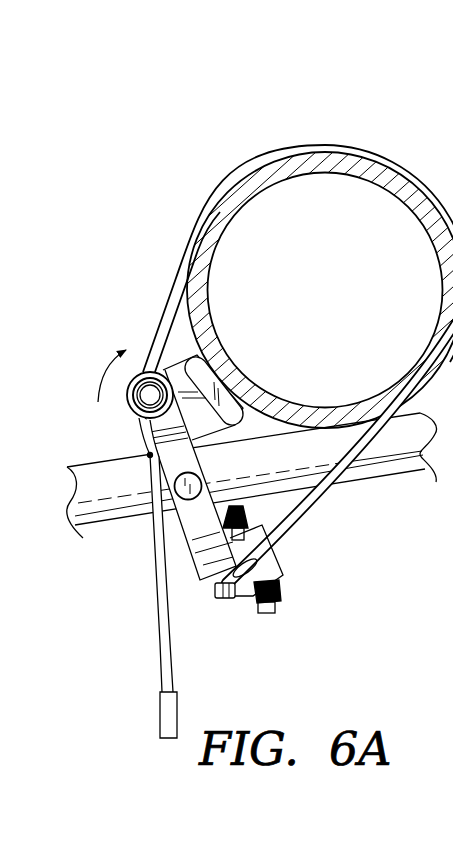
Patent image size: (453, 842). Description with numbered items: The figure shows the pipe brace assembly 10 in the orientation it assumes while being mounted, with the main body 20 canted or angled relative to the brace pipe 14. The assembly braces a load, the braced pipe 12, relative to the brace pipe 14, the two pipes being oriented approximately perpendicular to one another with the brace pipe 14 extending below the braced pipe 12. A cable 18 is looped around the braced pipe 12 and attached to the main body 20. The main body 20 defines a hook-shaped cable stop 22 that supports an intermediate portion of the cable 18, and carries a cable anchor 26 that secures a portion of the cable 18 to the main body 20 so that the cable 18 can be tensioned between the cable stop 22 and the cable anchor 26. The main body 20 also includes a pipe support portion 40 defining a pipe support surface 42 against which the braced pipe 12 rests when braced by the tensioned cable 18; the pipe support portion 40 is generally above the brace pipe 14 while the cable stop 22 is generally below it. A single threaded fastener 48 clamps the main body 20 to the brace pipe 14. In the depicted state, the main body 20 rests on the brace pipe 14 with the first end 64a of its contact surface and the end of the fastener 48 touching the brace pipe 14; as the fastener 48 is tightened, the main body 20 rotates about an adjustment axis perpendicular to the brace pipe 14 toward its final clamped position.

The pipe brace assembly 10 is at (374, 106).
The braced pipe 12 is at (405, 191).
The brace pipe 14 is at (388, 483).
The cable 18 is at (260, 164).
The main body 20 is at (188, 560).
The cable stop 22 is at (233, 603).
The cable anchor 26 is at (142, 368).
The pipe support portion 40 is at (189, 345).
The pipe support surface 42 is at (258, 405).
The threaded fastener 48 is at (288, 585).
The first end of the contact surface portion 64a is at (150, 455).